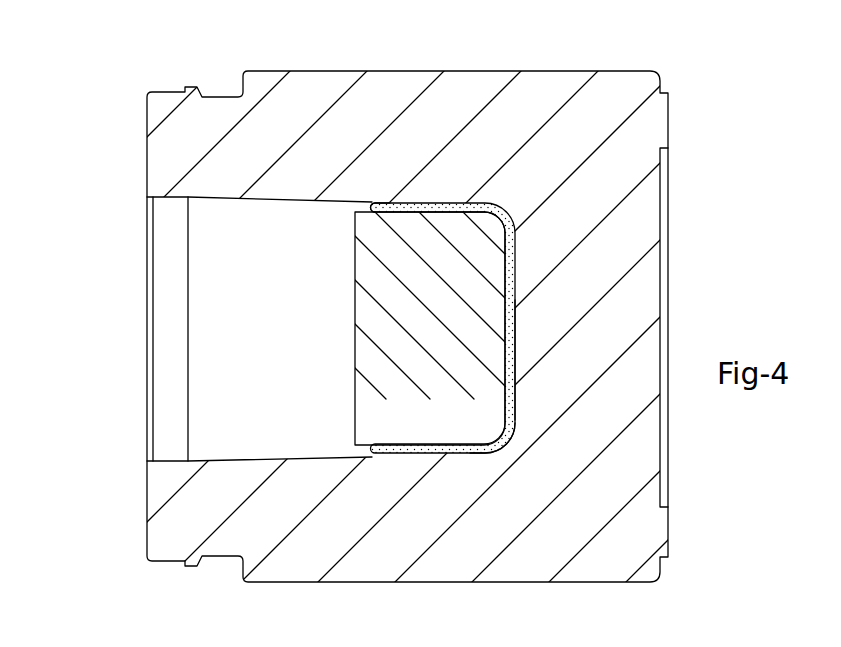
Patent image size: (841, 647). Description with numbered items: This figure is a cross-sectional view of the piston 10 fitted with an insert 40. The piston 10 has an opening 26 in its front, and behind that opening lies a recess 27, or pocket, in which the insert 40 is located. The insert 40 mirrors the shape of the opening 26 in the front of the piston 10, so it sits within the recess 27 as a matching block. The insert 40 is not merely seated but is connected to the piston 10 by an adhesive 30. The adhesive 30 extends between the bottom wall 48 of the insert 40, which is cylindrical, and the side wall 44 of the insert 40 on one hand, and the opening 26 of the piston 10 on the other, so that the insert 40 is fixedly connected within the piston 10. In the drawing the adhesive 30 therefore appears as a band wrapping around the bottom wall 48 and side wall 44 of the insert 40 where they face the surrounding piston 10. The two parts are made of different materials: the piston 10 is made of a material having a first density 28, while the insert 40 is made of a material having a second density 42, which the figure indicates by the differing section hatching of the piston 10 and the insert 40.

The piston 10 is at (672, 50).
The first density 28 is at (625, 143).
The opening 26 is at (112, 277).
The recess 27 is at (210, 391).
The insert 40 is at (352, 303).
The side wall 44 is at (375, 206).
The bottom wall 48 is at (512, 328).
The adhesive 30 is at (515, 384).
The second density 42 is at (497, 437).